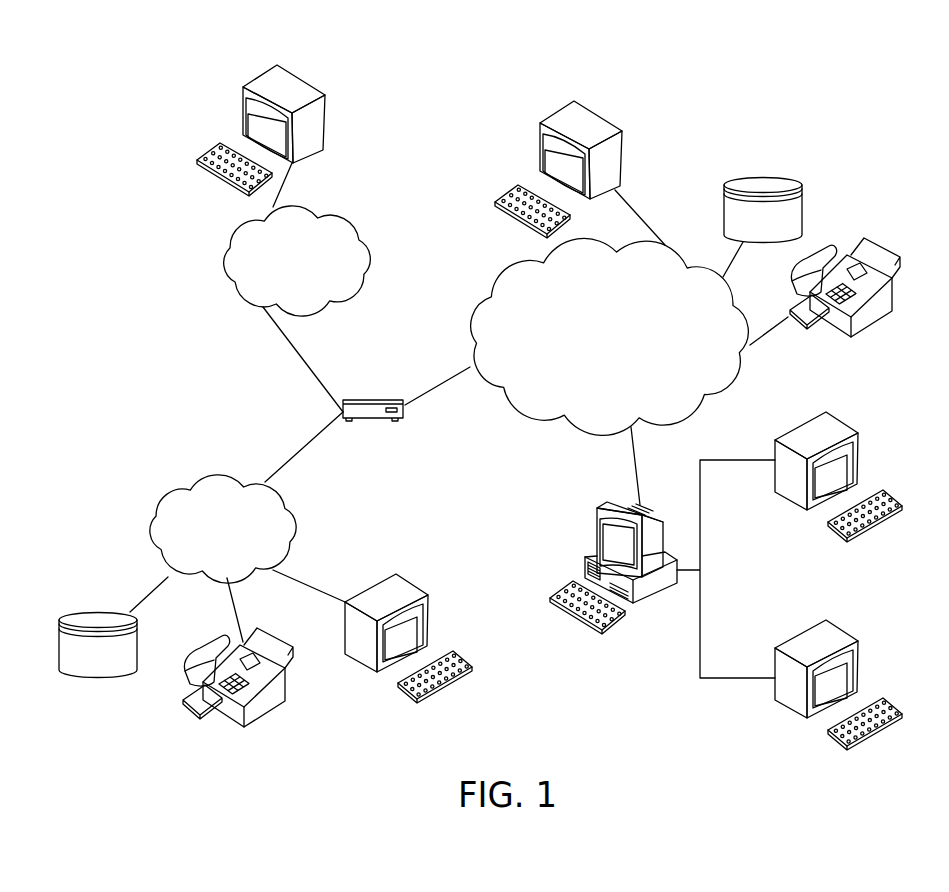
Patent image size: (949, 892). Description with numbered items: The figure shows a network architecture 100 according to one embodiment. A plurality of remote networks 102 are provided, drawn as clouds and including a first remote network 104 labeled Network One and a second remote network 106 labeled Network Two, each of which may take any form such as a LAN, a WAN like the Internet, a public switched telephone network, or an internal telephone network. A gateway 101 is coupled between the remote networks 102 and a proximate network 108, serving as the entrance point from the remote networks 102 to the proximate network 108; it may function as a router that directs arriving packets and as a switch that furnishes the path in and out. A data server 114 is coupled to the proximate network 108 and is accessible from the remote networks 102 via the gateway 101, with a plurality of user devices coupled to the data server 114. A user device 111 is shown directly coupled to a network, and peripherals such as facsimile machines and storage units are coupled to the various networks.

The network architecture 100 is at (712, 65).
The gateway 101 is at (368, 398).
The remote networks 102 is at (200, 338).
The first remote network 104 is at (152, 505).
The second remote network 106 is at (367, 242).
The proximate network 108 is at (720, 387).
The user device 111 is at (623, 140).
The data server 114 is at (595, 523).